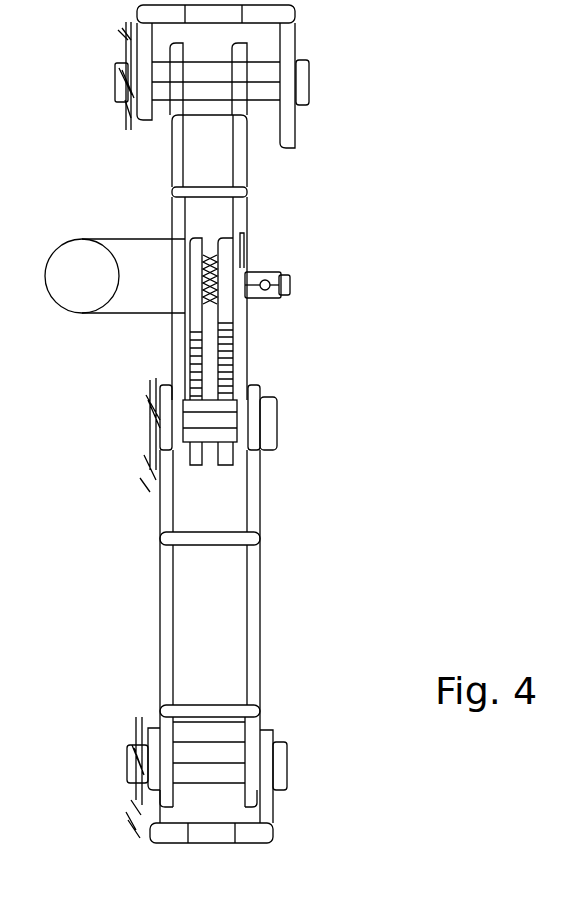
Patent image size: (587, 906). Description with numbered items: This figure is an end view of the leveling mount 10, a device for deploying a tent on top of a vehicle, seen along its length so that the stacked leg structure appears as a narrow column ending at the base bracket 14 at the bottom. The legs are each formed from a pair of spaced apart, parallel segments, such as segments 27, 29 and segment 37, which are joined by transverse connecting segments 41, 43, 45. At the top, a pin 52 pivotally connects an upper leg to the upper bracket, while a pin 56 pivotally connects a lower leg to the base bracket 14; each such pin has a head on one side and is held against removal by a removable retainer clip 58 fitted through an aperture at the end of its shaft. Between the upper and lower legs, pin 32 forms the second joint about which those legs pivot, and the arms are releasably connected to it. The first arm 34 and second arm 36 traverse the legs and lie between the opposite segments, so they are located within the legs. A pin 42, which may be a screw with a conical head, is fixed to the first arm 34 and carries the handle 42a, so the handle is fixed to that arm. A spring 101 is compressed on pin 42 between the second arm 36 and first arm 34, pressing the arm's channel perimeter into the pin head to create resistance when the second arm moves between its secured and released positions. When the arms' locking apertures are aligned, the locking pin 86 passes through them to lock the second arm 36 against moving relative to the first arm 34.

The leveling mount 10 is at (428, 115).
The pin 52 is at (268, 78).
The retainer clip 58 is at (126, 45).
The connecting segment 41 is at (180, 140).
The segment 27 is at (183, 208).
The segment 29 is at (242, 207).
The first arm 34 is at (190, 240).
The second arm 36 is at (229, 240).
The spring 101 is at (210, 275).
The pin 42 is at (247, 263).
The locking pin 86 is at (288, 277).
The handle 42a is at (56, 250).
The pin 32 is at (275, 402).
The segment 37 is at (250, 480).
The connecting segment 43 is at (170, 512).
The connecting segment 45 is at (237, 612).
The pin 56 is at (225, 760).
The base bracket 14 is at (265, 812).